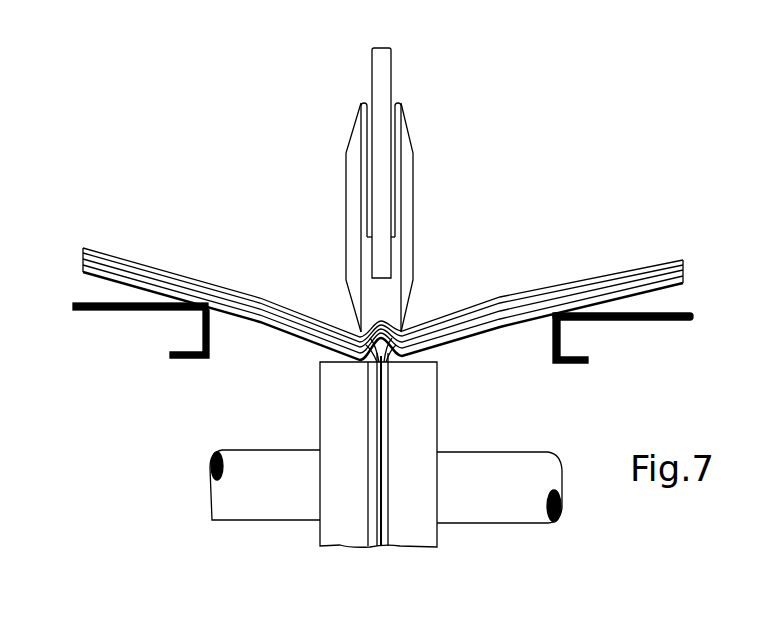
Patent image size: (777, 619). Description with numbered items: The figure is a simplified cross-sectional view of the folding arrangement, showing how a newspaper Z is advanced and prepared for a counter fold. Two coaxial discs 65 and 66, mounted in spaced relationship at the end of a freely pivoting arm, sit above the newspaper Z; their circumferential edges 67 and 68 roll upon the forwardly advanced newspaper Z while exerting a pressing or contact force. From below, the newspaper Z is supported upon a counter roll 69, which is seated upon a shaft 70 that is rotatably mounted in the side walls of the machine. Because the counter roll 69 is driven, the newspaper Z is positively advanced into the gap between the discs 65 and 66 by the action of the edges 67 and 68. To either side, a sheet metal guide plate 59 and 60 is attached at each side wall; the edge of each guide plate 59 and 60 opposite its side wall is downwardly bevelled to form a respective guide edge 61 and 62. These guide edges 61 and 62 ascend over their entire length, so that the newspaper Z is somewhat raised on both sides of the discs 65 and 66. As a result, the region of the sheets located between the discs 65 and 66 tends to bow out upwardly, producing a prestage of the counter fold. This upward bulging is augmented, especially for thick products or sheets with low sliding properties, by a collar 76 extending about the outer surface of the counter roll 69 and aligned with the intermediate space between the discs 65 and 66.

The guide plate 59 is at (643, 322).
The guide plate 60 is at (122, 311).
The guide edge 61 is at (545, 320).
The guide edge 62 is at (215, 314).
The disc 65 is at (405, 138).
The disc 66 is at (352, 150).
The circumferential edge 67 is at (403, 327).
The circumferential edge 68 is at (359, 329).
The counter roll 69 is at (427, 392).
The shaft 70 is at (508, 465).
The collar 76 is at (380, 426).
The newspaper Z is at (514, 298).